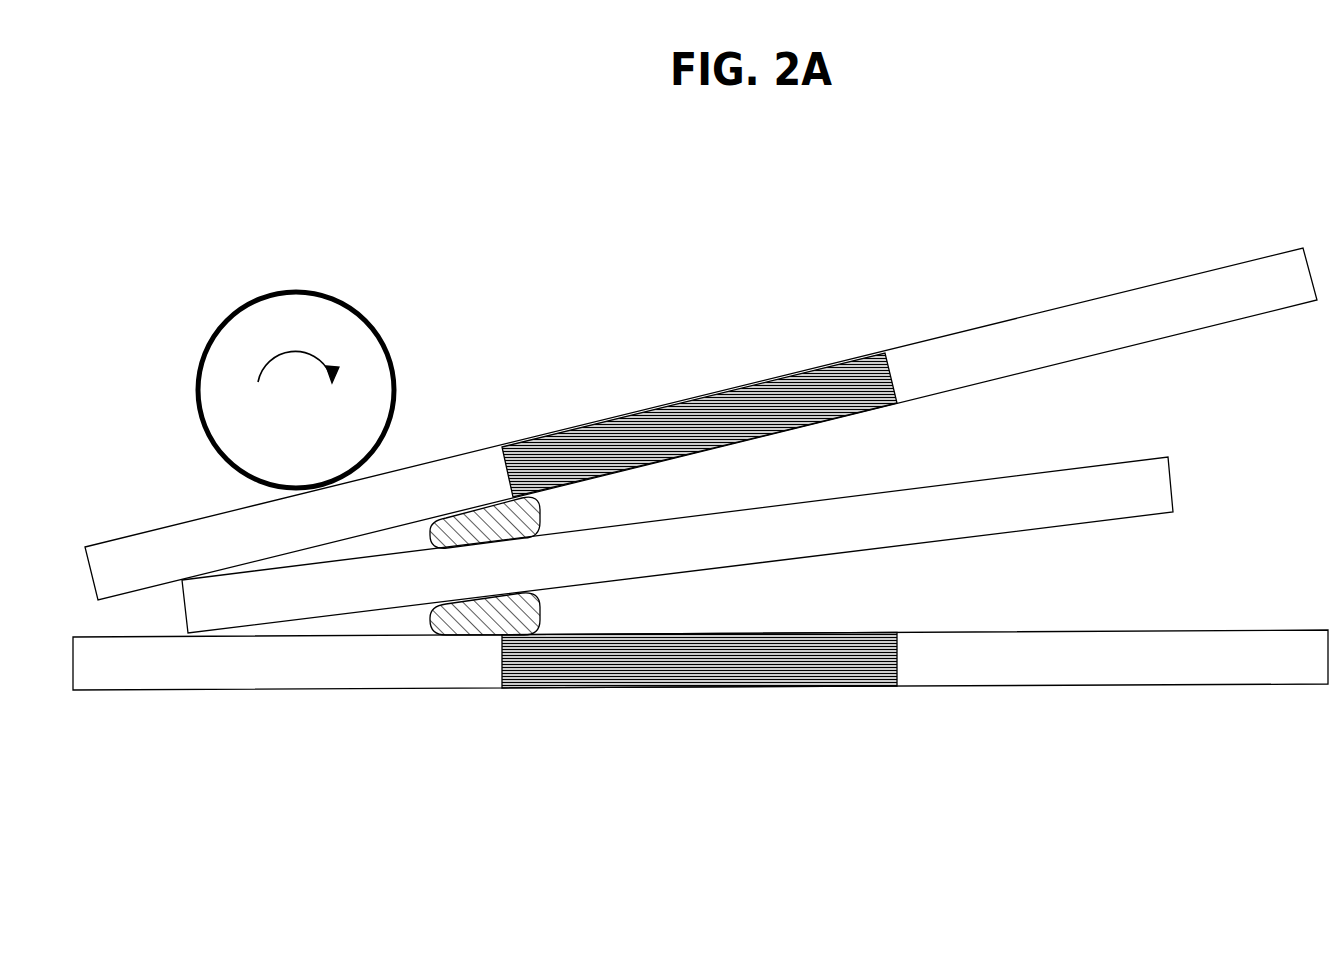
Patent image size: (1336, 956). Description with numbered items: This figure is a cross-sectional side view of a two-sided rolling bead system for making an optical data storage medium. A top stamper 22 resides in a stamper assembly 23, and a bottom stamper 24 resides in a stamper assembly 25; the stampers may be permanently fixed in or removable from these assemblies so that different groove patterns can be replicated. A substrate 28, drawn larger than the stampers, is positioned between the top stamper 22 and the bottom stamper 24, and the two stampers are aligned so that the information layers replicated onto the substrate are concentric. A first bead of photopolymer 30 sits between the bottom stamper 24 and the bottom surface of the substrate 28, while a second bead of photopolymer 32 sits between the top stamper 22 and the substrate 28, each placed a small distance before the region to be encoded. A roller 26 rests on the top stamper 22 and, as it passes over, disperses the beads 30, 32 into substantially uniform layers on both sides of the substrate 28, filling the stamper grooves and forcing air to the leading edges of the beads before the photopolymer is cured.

The top stamper 22 is at (693, 397).
The stamper assembly 23 is at (1257, 257).
The bottom stamper 24 is at (695, 690).
The stamper assembly 25 is at (1294, 629).
The roller 26 is at (297, 290).
The substrate 28 is at (1172, 485).
The first bead of photopolymer 30 is at (478, 634).
The second bead of photopolymer 32 is at (445, 547).